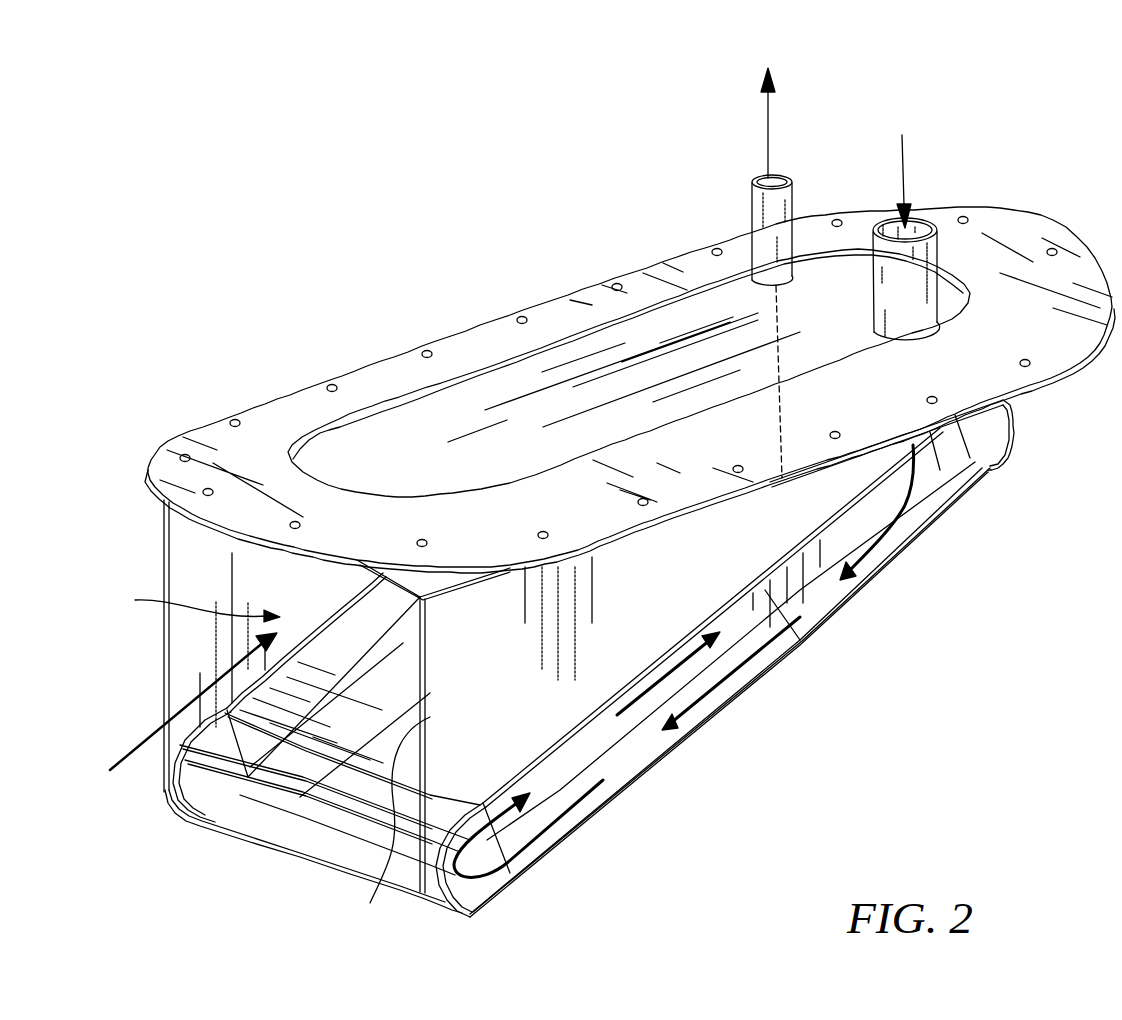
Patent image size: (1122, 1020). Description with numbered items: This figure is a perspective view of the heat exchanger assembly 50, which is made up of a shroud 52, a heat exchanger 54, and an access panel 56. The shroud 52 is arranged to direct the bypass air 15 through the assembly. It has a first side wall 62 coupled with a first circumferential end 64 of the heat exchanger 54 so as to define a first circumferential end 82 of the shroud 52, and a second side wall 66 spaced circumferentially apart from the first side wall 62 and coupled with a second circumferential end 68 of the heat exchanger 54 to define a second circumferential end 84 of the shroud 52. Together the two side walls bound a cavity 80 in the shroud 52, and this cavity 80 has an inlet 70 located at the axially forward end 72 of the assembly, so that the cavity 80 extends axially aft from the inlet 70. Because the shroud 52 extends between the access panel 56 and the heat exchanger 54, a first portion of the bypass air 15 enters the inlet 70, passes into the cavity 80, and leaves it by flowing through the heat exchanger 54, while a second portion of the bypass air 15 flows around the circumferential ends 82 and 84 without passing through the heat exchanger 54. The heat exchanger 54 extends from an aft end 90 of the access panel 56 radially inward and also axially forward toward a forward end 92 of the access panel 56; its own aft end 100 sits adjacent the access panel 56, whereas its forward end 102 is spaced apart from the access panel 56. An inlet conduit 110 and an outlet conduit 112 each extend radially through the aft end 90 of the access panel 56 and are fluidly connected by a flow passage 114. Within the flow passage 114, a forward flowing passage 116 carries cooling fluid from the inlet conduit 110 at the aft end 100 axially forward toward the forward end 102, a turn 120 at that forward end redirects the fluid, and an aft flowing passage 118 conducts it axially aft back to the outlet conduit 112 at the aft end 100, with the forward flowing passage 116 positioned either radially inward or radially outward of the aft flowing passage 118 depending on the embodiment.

The bypass air 15 is at (130, 765).
The heat exchanger assembly 50 is at (1030, 96).
The shroud 52 is at (165, 660).
The heat exchanger 54 is at (703, 612).
The access panel 56 is at (1003, 240).
The first side wall 62 is at (168, 545).
The first circumferential end 64 is at (168, 800).
The second side wall 66 is at (392, 825).
The second circumferential end 68 is at (635, 750).
The inlet 70 is at (343, 737).
The axially forward end 72 is at (154, 440).
The cavity 80 is at (191, 607).
The first circumferential end 82 is at (168, 580).
The second circumferential end 84 is at (890, 553).
The aft end 90 is at (964, 215).
The forward end 92 is at (208, 430).
The aft end 100 is at (980, 463).
The forward end 102 is at (460, 912).
The inlet conduit 110 is at (913, 227).
The outlet conduit 112 is at (778, 208).
The flow passage 114 is at (927, 513).
The forward flowing passage 116 is at (830, 590).
The aft flowing passage 118 is at (763, 593).
The turn 120 is at (433, 882).